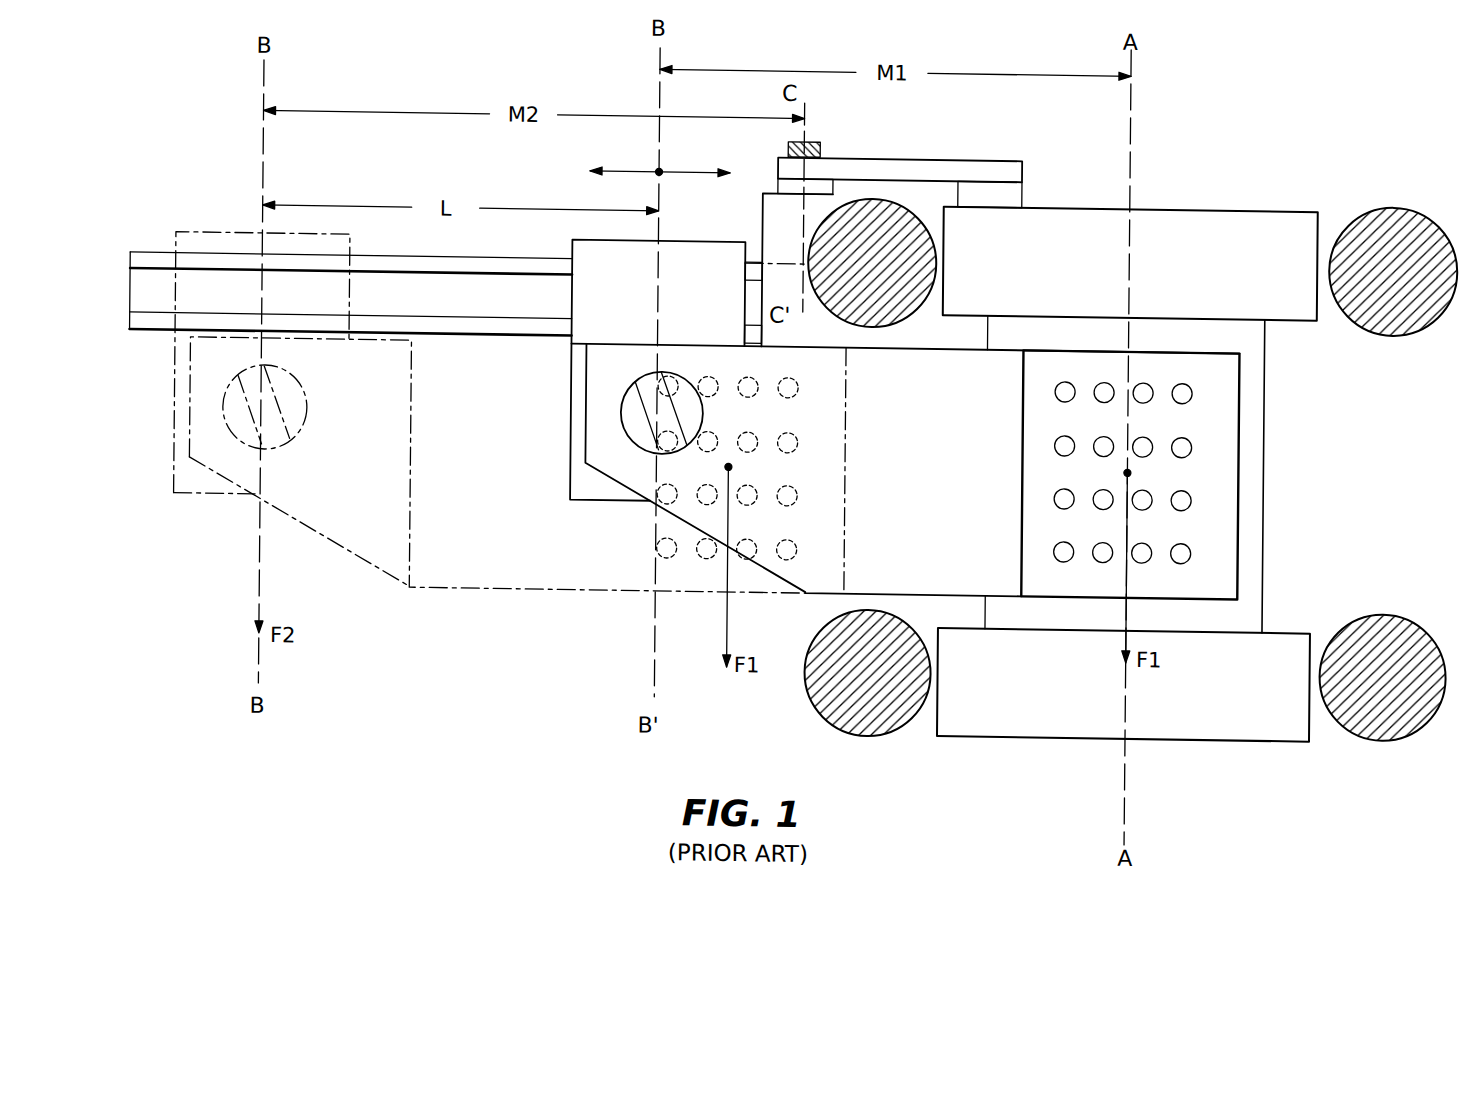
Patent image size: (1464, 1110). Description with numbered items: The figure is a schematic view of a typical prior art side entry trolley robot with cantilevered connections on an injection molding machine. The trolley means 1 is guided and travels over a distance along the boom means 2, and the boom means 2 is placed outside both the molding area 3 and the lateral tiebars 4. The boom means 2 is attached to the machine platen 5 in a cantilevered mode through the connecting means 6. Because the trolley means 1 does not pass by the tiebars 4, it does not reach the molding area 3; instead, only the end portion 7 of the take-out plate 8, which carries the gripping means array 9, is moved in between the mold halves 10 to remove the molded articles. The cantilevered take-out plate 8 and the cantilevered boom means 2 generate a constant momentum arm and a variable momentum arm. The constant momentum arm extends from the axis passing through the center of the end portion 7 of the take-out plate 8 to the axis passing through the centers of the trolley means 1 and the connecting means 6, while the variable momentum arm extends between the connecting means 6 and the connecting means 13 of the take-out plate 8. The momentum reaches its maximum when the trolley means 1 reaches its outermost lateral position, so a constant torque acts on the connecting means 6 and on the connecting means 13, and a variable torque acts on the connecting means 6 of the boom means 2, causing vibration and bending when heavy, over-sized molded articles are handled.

The trolley means 1 is at (610, 296).
The boom means 2 is at (430, 307).
The molding area 3 is at (1283, 570).
The lateral tiebars 4 is at (863, 737).
The machine platen 5 is at (1271, 296).
The connecting means 6 is at (820, 153).
The end portion 7 is at (1085, 576).
The take-out plate 8 is at (926, 365).
The gripping means array 9 is at (1187, 552).
The mold halves 10 is at (1251, 496).
The connecting means 13 is at (622, 432).